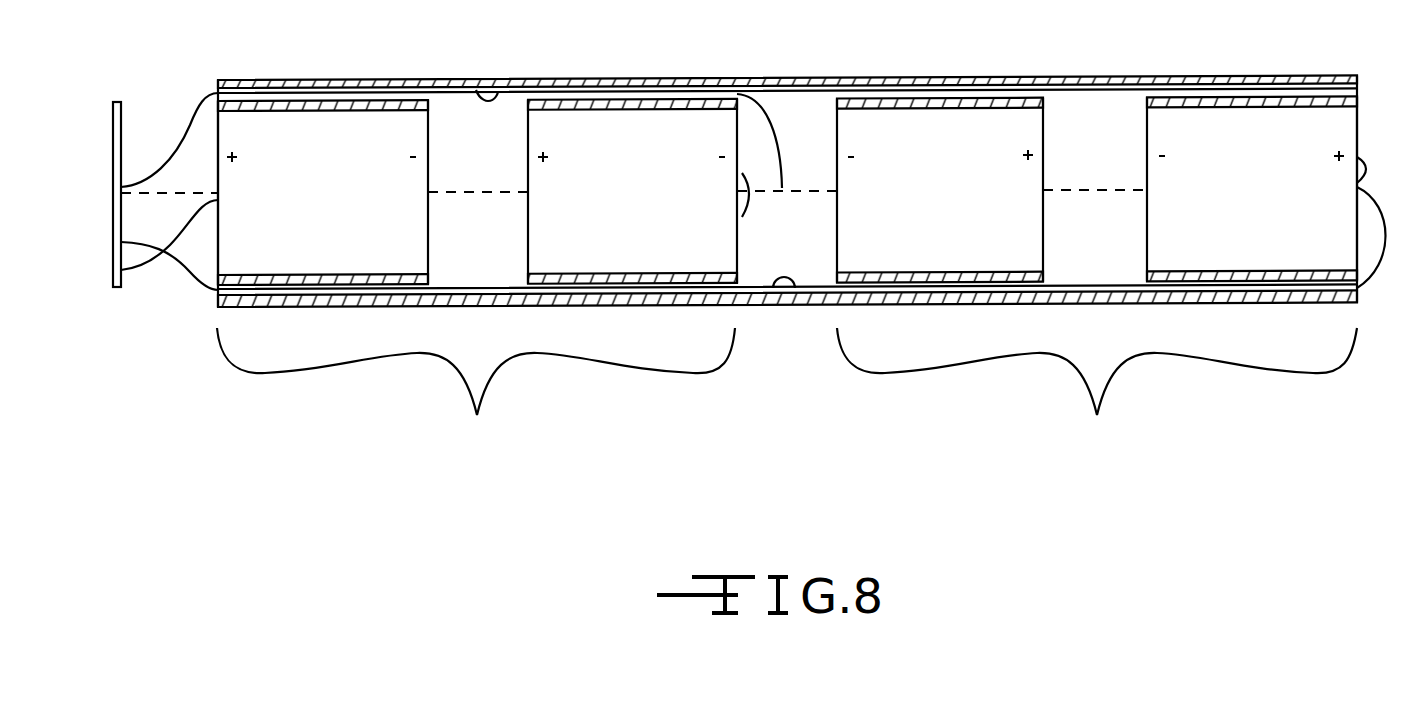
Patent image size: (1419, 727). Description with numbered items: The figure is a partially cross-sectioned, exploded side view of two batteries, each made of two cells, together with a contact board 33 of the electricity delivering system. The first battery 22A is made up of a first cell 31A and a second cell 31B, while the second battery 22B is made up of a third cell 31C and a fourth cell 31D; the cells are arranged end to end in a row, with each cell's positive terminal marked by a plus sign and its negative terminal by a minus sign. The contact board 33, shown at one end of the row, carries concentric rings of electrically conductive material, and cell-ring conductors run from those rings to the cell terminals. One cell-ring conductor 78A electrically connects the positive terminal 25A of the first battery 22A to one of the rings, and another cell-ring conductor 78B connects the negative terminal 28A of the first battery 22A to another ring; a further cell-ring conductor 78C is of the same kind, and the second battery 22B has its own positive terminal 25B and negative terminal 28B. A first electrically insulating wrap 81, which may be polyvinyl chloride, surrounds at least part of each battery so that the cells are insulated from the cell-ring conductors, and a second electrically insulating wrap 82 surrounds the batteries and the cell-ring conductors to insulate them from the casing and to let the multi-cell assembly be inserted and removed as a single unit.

The contact board 33 is at (123, 120).
The positive terminal 25A is at (218, 147).
The positive terminal 25B is at (1360, 176).
The negative terminal 28A is at (742, 217).
The negative terminal 28B is at (837, 193).
The first cell 31A is at (273, 230).
The second cell 31B is at (595, 143).
The third cell 31C is at (915, 155).
The fourth cell 31D is at (1213, 162).
The first electrically insulating wrap 81 is at (325, 277).
The second electrically insulating wrap 82 is at (800, 78).
The cell-ring conductor 78A is at (153, 265).
The cell-ring conductor 78B is at (476, 90).
The cell-ring conductor 78C is at (771, 290).
The first battery 22A is at (476, 389).
The second battery 22B is at (1097, 388).